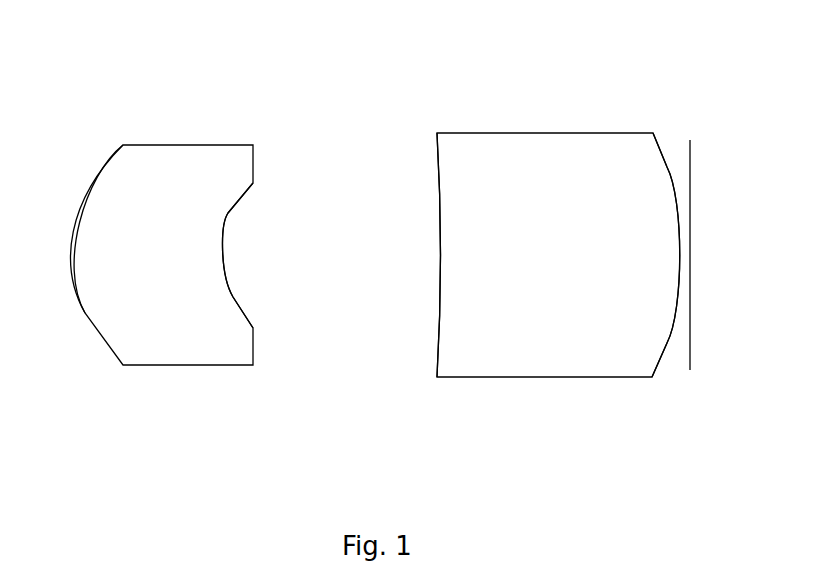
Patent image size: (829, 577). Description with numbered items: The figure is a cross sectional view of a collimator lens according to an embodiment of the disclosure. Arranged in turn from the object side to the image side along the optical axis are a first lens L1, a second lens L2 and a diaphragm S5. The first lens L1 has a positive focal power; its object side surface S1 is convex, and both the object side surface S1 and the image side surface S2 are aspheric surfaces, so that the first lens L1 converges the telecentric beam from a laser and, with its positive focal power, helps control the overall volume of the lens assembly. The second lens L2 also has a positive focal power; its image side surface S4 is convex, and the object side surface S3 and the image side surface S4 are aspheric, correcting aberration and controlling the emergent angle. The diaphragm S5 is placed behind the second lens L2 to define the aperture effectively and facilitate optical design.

The first lens L1 is at (153, 145).
The second lens L2 is at (533, 133).
The object side surface of the first lens S1 is at (85, 315).
The image side surface of the first lens S2 is at (233, 298).
The object side surface of the second lens S3 is at (441, 297).
The image side surface of the second lens S4 is at (663, 353).
The diaphragm S5 is at (690, 140).